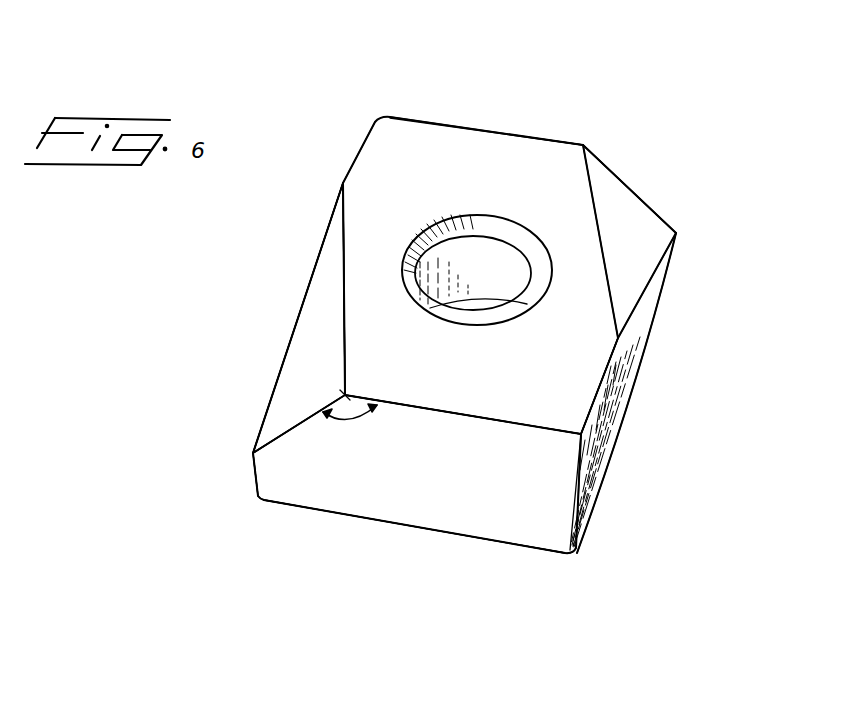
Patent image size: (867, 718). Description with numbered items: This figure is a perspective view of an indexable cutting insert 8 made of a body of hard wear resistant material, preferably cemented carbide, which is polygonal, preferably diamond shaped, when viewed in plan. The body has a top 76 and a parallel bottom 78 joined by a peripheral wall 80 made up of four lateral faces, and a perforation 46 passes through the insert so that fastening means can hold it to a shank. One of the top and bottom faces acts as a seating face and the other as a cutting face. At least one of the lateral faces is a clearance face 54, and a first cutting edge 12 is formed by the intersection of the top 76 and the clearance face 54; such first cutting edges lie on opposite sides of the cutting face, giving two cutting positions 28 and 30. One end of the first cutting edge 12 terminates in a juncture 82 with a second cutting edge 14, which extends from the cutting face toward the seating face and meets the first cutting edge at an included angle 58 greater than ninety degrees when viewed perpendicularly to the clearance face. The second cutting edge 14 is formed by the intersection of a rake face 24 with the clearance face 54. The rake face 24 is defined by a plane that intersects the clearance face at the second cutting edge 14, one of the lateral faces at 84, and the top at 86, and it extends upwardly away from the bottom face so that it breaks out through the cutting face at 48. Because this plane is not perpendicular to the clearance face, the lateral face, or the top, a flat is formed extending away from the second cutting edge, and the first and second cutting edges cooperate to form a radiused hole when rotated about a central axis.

The insert 8 is at (422, 135).
The first cutting edge 12 is at (443, 125).
The second cutting edge 14 is at (285, 437).
The rake face 24 is at (625, 225).
The cutting position 28 is at (245, 403).
The cutting position 30 is at (598, 125).
The perforation 46 is at (477, 312).
The break-out of rake face 48 is at (343, 183).
The clearance face 54 is at (430, 503).
The included angle 58 is at (355, 422).
The top face 76 is at (530, 187).
The bottom face 78 is at (340, 510).
The peripheral wall 80 is at (603, 460).
The juncture 82 is at (347, 393).
The intersection with lateral face 84 is at (312, 278).
The intersection with top 86 is at (352, 275).